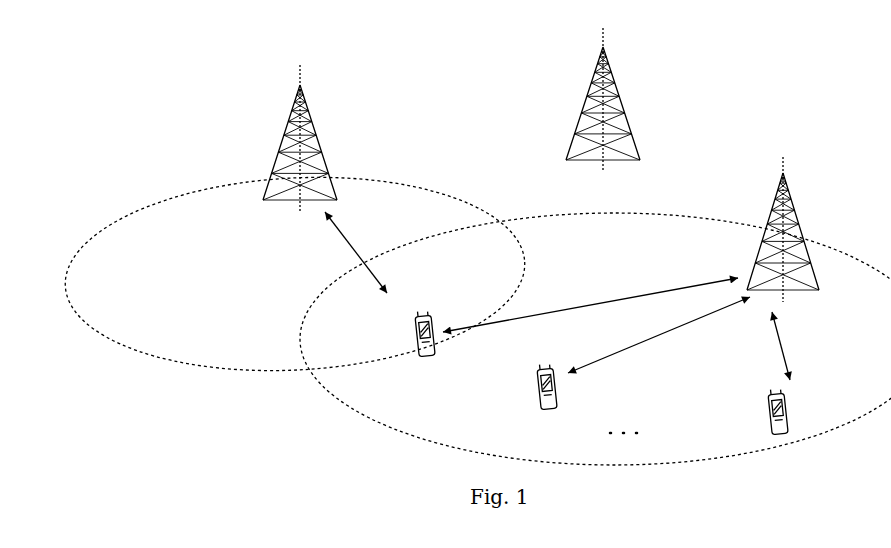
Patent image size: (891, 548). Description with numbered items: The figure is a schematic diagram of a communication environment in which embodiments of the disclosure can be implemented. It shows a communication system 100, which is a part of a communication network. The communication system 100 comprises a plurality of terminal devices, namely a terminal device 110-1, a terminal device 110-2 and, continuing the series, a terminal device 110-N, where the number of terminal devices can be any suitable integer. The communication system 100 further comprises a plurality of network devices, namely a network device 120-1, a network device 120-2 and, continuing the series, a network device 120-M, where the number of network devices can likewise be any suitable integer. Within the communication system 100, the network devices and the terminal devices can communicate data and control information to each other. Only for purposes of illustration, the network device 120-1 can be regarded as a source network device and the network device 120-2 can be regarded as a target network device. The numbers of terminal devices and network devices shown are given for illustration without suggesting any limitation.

The communication system 100 is at (542, 55).
The terminal device 110-1 is at (410, 333).
The terminal device 110-2 is at (531, 384).
The terminal device 110-N is at (762, 412).
The network device 120-1 is at (787, 186).
The network device 120-2 is at (302, 96).
The network device 120-M is at (606, 58).